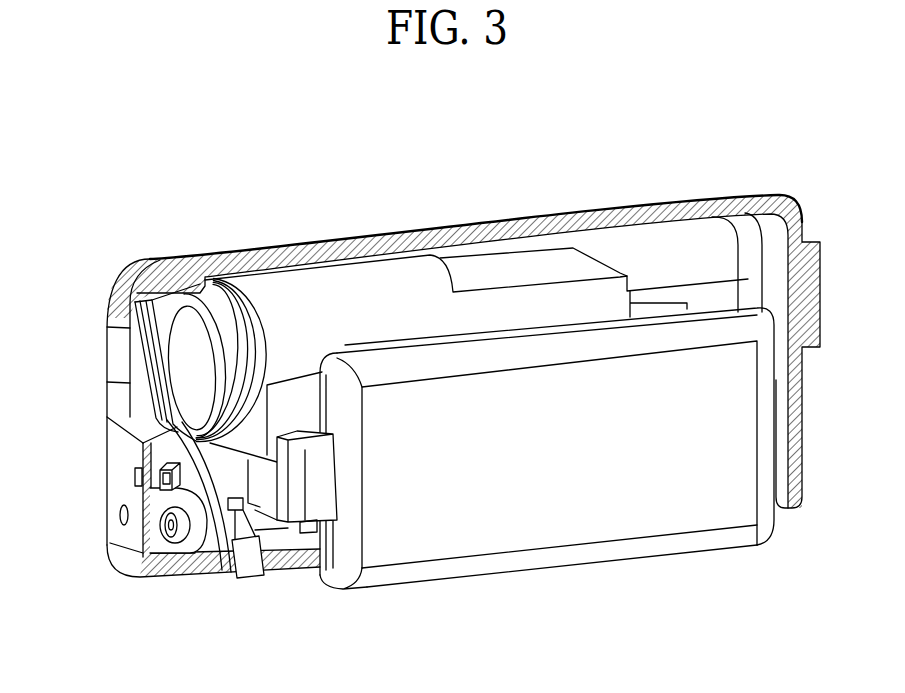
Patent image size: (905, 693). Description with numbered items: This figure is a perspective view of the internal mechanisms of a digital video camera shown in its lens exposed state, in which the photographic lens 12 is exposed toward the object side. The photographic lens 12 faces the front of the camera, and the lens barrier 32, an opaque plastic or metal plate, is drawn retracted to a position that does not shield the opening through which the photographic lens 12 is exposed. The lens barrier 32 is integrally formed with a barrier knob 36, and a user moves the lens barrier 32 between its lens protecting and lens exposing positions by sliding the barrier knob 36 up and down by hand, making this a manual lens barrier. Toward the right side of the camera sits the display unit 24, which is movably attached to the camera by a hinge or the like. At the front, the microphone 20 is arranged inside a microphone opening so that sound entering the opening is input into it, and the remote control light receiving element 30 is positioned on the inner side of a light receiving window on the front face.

The photographic lens 12 is at (355, 275).
The microphone 20 is at (192, 578).
The display unit 24 is at (682, 515).
The remote control light receiving element 30 is at (160, 481).
The lens barrier 32 is at (197, 357).
The barrier knob 36 is at (250, 563).